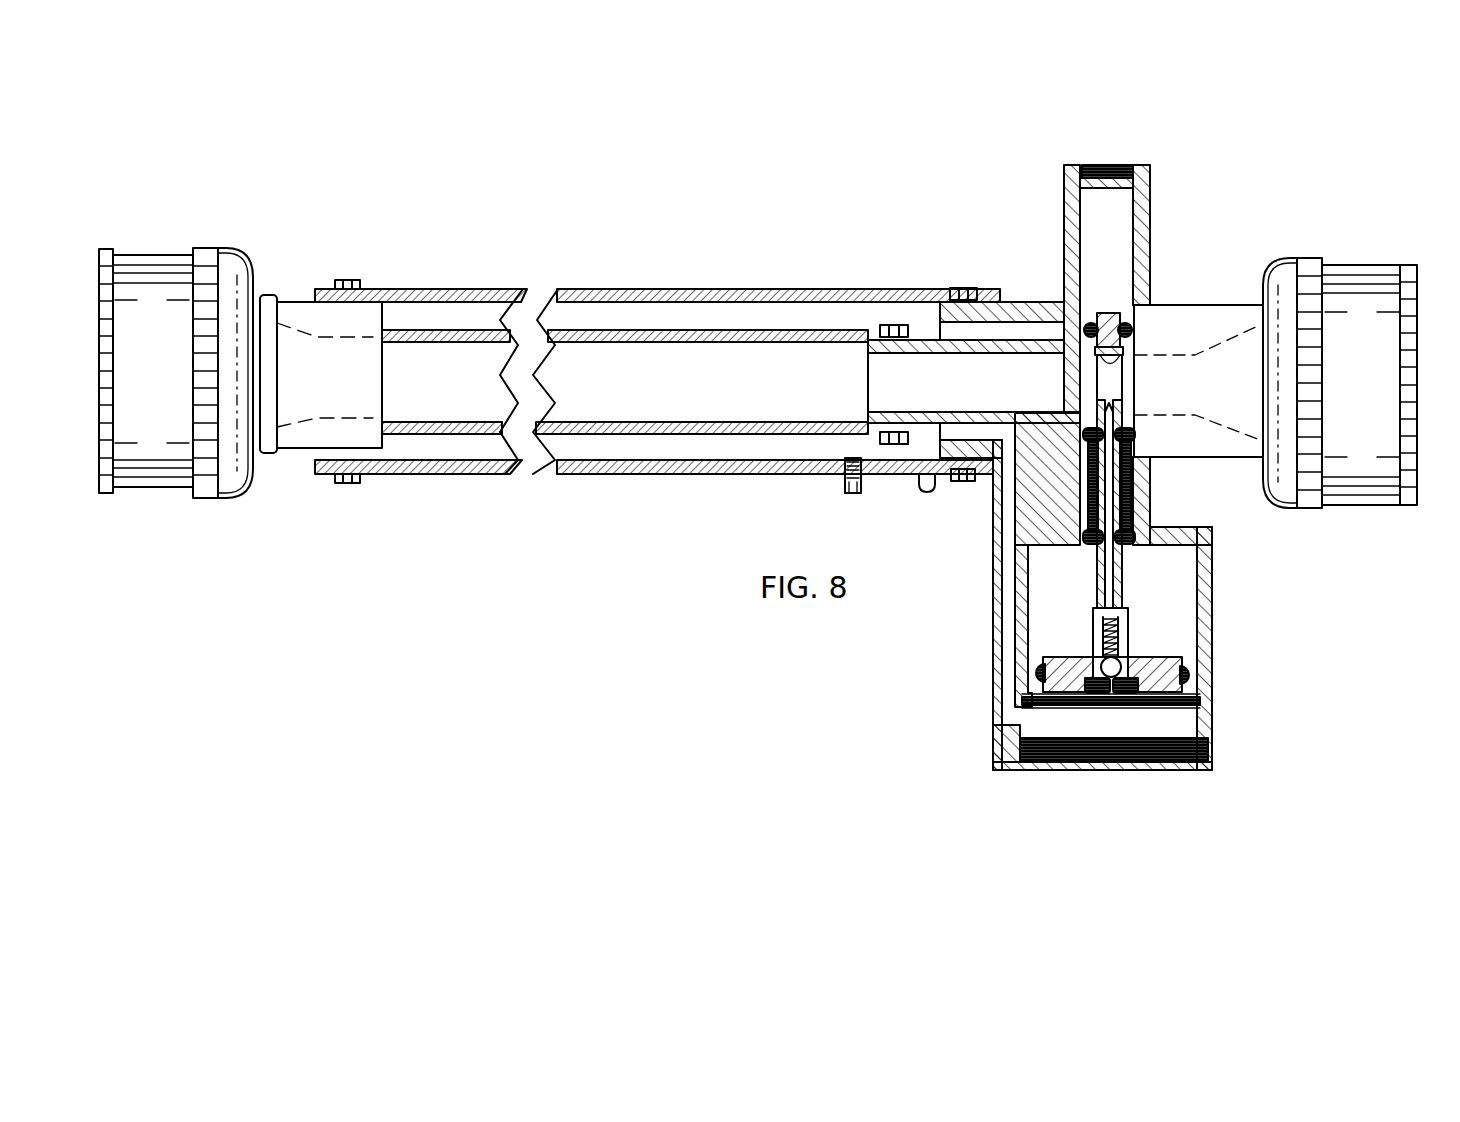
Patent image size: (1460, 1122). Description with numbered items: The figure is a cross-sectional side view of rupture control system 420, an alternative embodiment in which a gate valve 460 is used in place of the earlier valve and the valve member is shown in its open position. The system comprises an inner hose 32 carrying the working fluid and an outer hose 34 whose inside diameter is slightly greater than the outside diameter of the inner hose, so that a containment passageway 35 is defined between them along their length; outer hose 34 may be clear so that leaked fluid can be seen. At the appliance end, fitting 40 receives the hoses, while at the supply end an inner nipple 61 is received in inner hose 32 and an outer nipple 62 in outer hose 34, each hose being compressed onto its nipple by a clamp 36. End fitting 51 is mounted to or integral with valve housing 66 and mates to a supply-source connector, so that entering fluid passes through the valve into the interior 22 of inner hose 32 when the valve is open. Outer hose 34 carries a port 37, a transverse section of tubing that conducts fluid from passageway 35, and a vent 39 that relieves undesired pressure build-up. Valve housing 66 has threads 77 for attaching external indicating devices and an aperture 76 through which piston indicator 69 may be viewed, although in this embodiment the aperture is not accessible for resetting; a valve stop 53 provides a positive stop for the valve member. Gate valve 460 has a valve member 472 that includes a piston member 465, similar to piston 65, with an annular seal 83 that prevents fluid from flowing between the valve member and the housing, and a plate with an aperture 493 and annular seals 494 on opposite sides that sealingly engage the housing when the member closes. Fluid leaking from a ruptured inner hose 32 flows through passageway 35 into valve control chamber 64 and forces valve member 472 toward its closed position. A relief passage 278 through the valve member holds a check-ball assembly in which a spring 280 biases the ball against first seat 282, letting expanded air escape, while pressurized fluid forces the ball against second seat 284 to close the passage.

The fitting 40 is at (167, 445).
The containment/control passageway 35 is at (493, 318).
The outer hose 34 is at (447, 288).
The clamp 36 is at (345, 283).
The interior of inner hose 22 is at (583, 385).
The inner hose 32 is at (660, 330).
The inner nipple 61 is at (856, 325).
The outer nipple 62 is at (1015, 303).
The threads 77 is at (1128, 170).
The aperture 76 is at (1135, 258).
The piston indicator 69 is at (1113, 317).
The piston 65 is at (1123, 322).
The aperture 493 is at (1195, 303).
The end fitting 51 is at (1380, 470).
The annular seal 494 is at (1127, 437).
The relief passage 278 is at (1110, 585).
The valve member 472 is at (1128, 613).
The second seat 284 is at (1097, 610).
The gate valve 460 is at (1220, 648).
The spring 280 is at (1110, 638).
The first seat 282 is at (1097, 697).
The annular seal 83 is at (1195, 684).
The piston member 465 is at (1193, 703).
The valve housing 66 is at (1110, 705).
The valve control chamber 64 is at (993, 757).
The valve stop 53 is at (1053, 721).
The vent 39 is at (843, 488).
The port 37 is at (922, 490).
The rupture control system 420 is at (1308, 603).